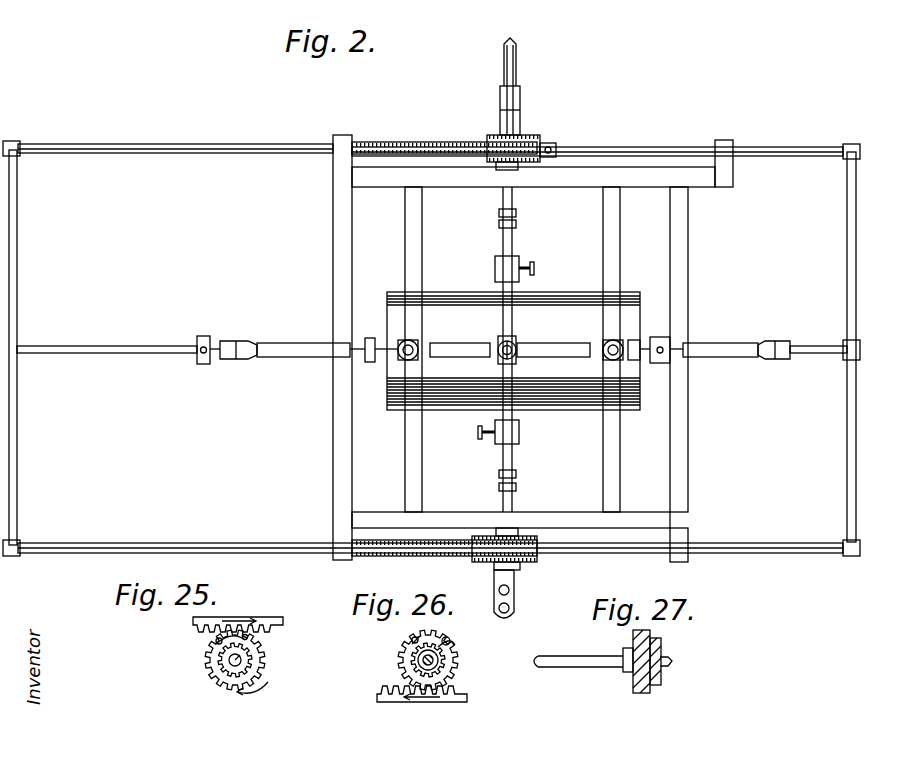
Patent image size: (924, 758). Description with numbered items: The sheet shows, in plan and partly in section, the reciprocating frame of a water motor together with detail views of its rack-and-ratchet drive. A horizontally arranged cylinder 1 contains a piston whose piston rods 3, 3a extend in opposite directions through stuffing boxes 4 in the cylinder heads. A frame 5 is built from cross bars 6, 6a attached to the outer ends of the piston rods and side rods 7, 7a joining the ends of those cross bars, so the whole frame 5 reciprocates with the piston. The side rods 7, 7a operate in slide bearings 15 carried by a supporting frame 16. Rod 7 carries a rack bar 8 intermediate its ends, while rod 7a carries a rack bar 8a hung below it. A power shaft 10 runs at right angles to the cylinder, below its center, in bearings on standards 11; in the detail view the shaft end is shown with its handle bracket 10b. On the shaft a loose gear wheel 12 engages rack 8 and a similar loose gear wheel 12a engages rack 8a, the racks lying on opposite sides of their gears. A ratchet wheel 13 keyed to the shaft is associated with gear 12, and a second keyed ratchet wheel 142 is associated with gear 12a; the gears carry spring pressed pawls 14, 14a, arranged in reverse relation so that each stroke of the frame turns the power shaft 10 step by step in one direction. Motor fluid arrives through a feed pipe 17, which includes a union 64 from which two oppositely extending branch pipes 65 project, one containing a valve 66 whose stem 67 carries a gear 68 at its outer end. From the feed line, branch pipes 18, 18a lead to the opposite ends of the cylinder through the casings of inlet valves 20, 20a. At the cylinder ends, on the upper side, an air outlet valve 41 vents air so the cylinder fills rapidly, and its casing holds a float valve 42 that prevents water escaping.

In FIG. 2, the cylinder 1 is at (452, 300).
In FIG. 2, the piston rod 3 is at (124, 353).
In FIG. 2, the piston rod 3a is at (796, 345).
In FIG. 2, the stuffing box 4 is at (368, 362).
In FIG. 2, the air outlet valve 41 is at (400, 360).
In FIG. 2, the float valve 42 is at (398, 345).
In FIG. 2, the frame 5 is at (175, 135).
In FIG. 2, the cross bar 6 is at (18, 490).
In FIG. 2, the cross bar 6a is at (857, 482).
In FIG. 2, the side rod 7 is at (275, 555).
In FIG. 2, the side rod 7a is at (784, 150).
In FIG. 2, the rack bar 8 is at (360, 556).
In FIG. 25, the rack bar 8 is at (268, 622).
In FIG. 2, the rack bar 8a is at (410, 144).
In FIG. 26, the rack bar 8a is at (460, 700).
In FIG. 2, the power shaft 10 is at (520, 72).
In FIG. 25, the power shaft 10 is at (242, 662).
In FIG. 26, the power shaft 10 is at (430, 662).
In FIG. 27, the power shaft 10 is at (562, 668).
In FIG. 2, the shaft handle bracket 10b is at (515, 590).
In FIG. 2, the standard 11 is at (517, 112).
In FIG. 2, the gear wheel 12 is at (538, 546).
In FIG. 25, the gear wheel 12 is at (265, 650).
In FIG. 27, the gear wheel 12 is at (633, 640).
In FIG. 2, the gear wheel 12a is at (556, 147).
In FIG. 26, the gear wheel 12a is at (400, 668).
In FIG. 2, the ratchet wheel 13 is at (520, 563).
In FIG. 25, the ratchet wheel 13 is at (248, 655).
In FIG. 27, the ratchet wheel 13 is at (661, 648).
In FIG. 25, the spring pressed pawl 14 is at (216, 642).
In FIG. 26, the spring pressed pawl 14a is at (450, 640).
In FIG. 2, the ratchet wheel 142 is at (530, 140).
In FIG. 26, the ratchet wheel 142 is at (412, 648).
In FIG. 2, the slide bearing 15 is at (344, 148).
In FIG. 2, the supporting frame 16 is at (690, 461).
In FIG. 2, the feed pipe 17 is at (520, 351).
In FIG. 2, the branch pipe 18 is at (290, 357).
In FIG. 2, the branch pipe 18a is at (722, 357).
In FIG. 2, the inlet valve 20 is at (235, 360).
In FIG. 2, the inlet valve 20a is at (778, 360).
In FIG. 2, the union 64 is at (499, 343).
In FIG. 2, the branch pipe 65 is at (512, 310).
In FIG. 2, the valve 66 is at (500, 262).
In FIG. 2, the stem 67 is at (516, 224).
In FIG. 2, the gear 68 is at (516, 213).